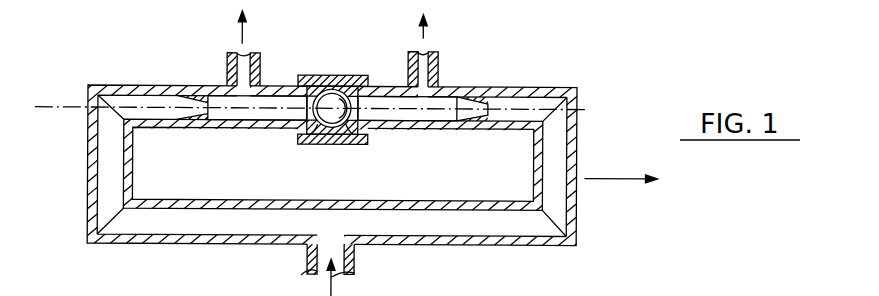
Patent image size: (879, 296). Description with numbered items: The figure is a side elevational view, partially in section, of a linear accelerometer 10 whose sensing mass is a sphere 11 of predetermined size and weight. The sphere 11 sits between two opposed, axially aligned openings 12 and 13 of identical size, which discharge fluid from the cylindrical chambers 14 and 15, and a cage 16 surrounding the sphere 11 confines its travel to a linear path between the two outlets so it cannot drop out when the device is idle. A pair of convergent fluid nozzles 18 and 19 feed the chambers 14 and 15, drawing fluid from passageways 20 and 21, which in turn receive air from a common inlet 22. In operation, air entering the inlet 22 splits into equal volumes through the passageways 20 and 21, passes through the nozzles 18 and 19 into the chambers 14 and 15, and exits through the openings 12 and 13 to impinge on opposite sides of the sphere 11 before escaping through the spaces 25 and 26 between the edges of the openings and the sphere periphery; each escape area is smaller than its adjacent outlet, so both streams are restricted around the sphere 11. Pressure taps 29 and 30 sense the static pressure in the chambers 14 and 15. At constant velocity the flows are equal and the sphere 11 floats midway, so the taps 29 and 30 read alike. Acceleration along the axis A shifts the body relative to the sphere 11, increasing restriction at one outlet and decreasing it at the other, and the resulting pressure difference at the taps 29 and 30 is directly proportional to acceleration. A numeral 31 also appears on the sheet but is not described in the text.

The accelerometer 10 is at (588, 112).
The sphere 11 is at (330, 95).
The opening 12 is at (312, 145).
The opening 13 is at (350, 143).
The chamber 14 is at (270, 93).
The chamber 15 is at (378, 95).
The cage 16 is at (300, 146).
The convergent fluid nozzle 18 is at (188, 99).
The convergent fluid nozzle 19 is at (477, 95).
The passageway 20 is at (127, 226).
The passageway 21 is at (541, 224).
The inlet 22 is at (341, 257).
The space 25 is at (314, 76).
The space 26 is at (356, 78).
The pressure tap 29 is at (227, 62).
The pressure tap 30 is at (438, 60).
The inner container 31 is at (798, 291).
The axis A is at (53, 106).